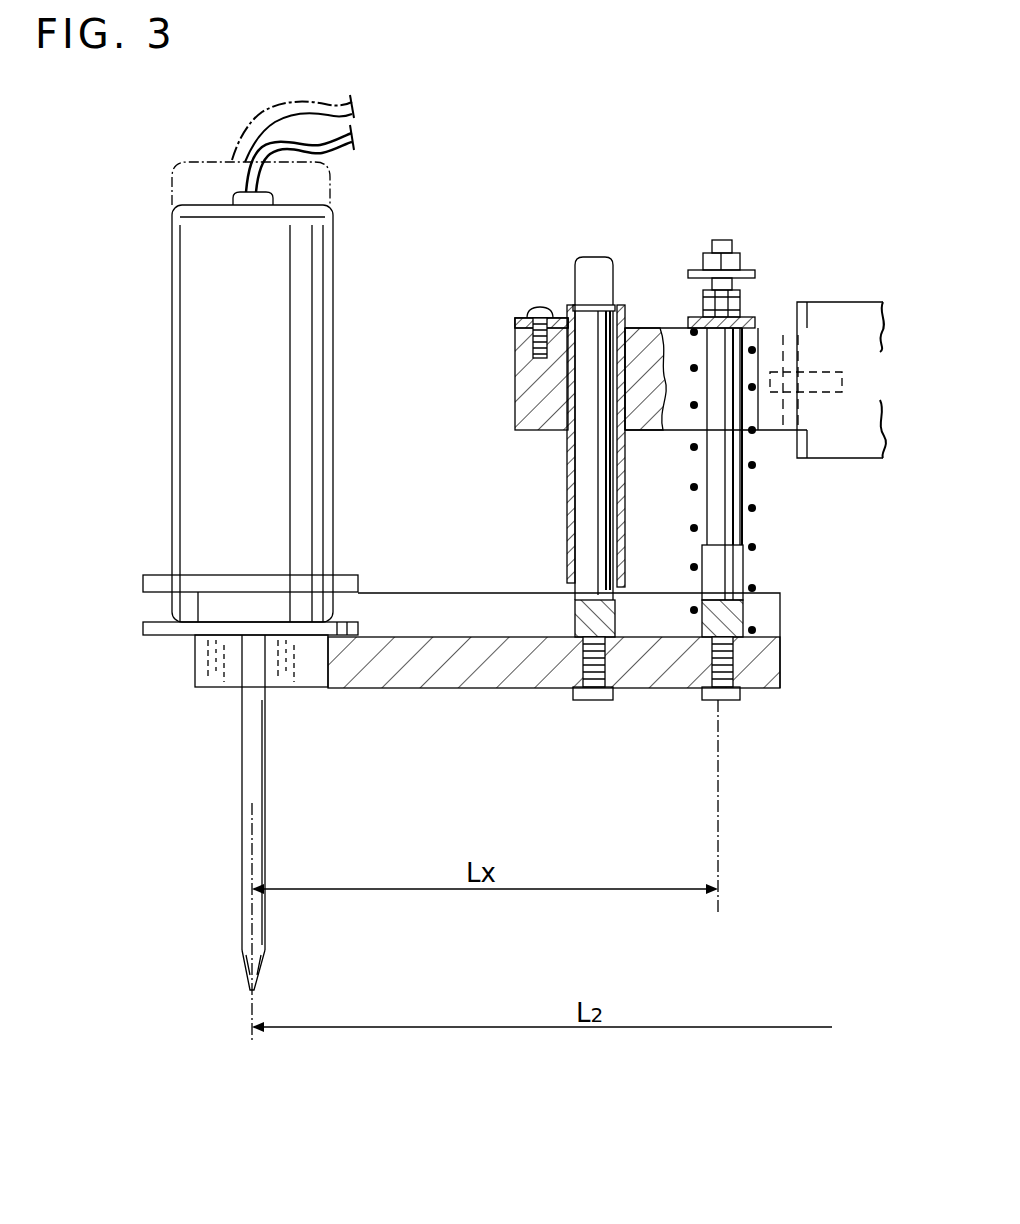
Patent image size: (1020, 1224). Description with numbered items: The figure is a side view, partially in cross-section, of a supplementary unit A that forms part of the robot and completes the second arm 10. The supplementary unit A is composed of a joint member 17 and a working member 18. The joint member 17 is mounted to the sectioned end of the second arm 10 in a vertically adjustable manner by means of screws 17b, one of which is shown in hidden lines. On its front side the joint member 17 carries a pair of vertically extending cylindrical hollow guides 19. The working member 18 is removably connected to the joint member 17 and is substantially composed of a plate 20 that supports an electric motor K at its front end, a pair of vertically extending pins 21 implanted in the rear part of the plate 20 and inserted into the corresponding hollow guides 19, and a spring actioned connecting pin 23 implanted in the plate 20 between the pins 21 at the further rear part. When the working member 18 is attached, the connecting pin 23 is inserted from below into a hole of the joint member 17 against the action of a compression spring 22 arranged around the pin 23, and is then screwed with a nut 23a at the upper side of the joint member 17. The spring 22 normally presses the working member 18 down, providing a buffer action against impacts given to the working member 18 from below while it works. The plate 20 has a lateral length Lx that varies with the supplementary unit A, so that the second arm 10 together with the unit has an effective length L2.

The electric motor K is at (305, 492).
The second arm 10 is at (862, 302).
The joint member 17 is at (555, 294).
The screws 17b is at (840, 392).
The working member 18 is at (493, 696).
The cylindrical hollow guides 19 is at (568, 500).
The plate 20 is at (440, 690).
The vertically extending pins 21 is at (598, 304).
The compression spring 22 is at (756, 467).
The spring actioned connecting pin 23 is at (742, 528).
The nut 23a is at (745, 303).
The supplementary unit A is at (763, 692).